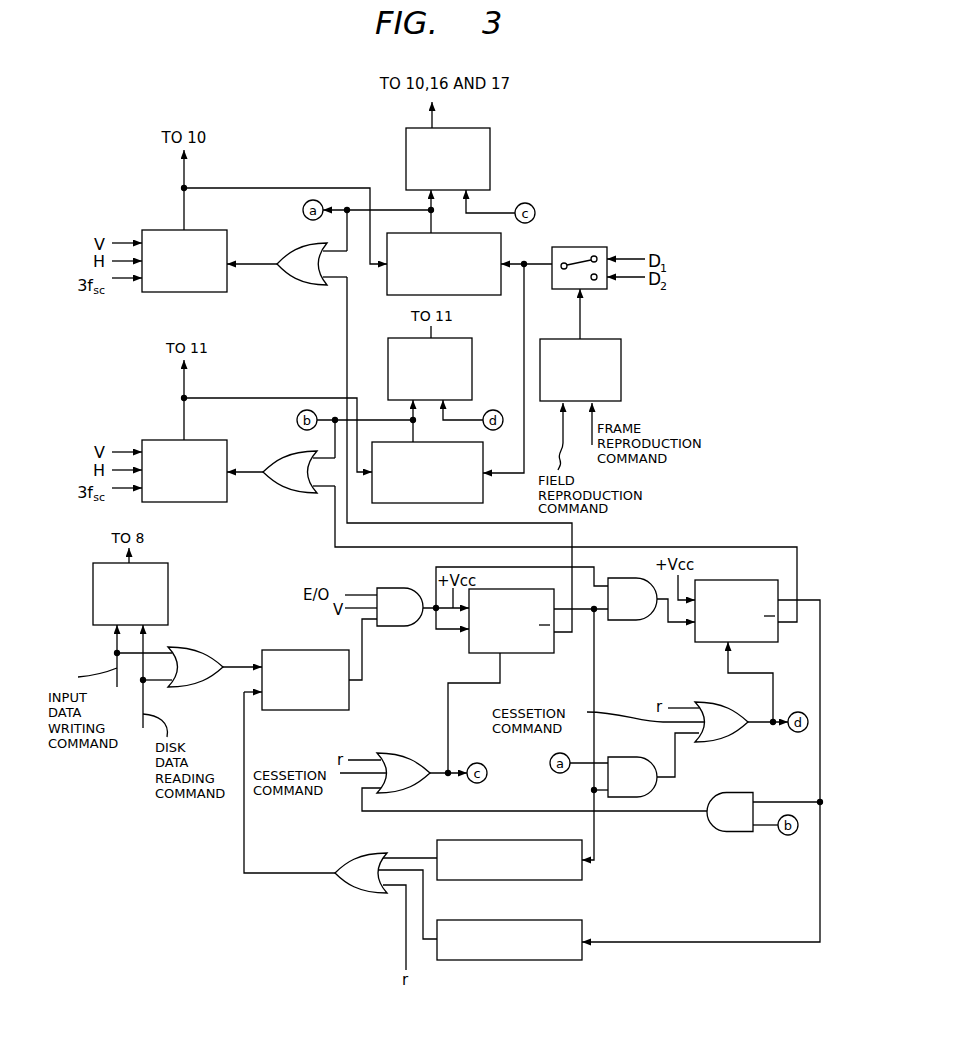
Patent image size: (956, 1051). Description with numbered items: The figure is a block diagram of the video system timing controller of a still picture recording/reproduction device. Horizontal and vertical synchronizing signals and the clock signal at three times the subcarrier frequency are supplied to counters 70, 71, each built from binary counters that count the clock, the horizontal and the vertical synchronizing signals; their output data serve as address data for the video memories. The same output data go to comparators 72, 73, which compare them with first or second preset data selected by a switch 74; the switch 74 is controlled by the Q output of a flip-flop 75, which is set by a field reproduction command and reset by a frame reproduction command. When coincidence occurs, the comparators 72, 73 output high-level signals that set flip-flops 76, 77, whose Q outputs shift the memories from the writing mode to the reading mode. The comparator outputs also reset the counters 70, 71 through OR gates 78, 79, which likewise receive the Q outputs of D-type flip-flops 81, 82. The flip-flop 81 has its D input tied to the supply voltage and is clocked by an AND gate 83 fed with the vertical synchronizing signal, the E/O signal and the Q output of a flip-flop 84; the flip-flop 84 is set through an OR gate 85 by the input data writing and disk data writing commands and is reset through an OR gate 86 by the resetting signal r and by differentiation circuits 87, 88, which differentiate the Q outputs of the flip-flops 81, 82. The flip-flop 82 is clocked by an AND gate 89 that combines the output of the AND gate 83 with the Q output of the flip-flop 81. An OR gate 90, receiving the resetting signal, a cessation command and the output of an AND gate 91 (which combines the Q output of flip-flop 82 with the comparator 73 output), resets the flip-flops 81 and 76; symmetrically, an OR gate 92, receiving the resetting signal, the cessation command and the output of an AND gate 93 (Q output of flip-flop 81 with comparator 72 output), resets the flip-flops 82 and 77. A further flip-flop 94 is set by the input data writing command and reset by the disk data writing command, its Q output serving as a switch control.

The counter 70 is at (176, 292).
The counter 71 is at (184, 502).
The comparator 72 is at (475, 295).
The comparator 73 is at (483, 457).
The switch 74 is at (580, 247).
The flip-flop 75 is at (621, 352).
The flip-flop 76 is at (490, 140).
The flip-flop 77 is at (472, 353).
The OR gate 78 is at (297, 285).
The OR gate 79 is at (295, 493).
The D-type flip-flop 81 is at (525, 653).
The D-type flip-flop 82 is at (742, 580).
The AND gate 83 is at (393, 588).
The flip-flop 84 is at (300, 650).
The OR gate 85 is at (190, 647).
The OR gate 86 is at (365, 853).
The differentiation circuit 87 is at (540, 840).
The differentiation circuit 88 is at (540, 920).
The AND gate 89 is at (630, 620).
The OR gate 90 is at (397, 753).
The AND gate 91 is at (733, 832).
The OR gate 92 is at (710, 702).
The AND gate 93 is at (645, 795).
The flip-flop 94 is at (168, 580).